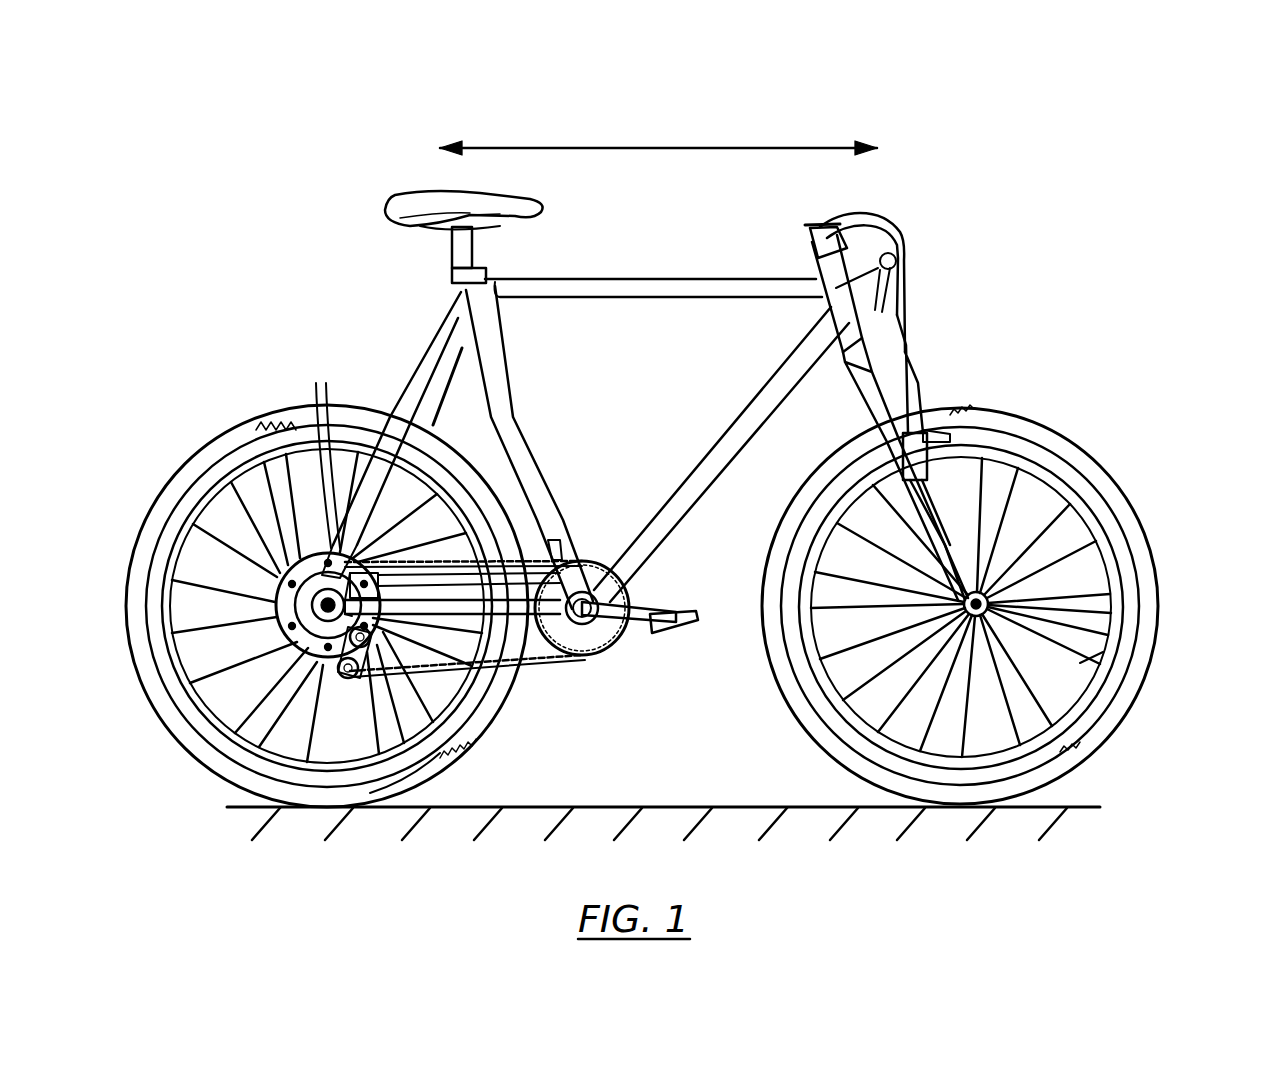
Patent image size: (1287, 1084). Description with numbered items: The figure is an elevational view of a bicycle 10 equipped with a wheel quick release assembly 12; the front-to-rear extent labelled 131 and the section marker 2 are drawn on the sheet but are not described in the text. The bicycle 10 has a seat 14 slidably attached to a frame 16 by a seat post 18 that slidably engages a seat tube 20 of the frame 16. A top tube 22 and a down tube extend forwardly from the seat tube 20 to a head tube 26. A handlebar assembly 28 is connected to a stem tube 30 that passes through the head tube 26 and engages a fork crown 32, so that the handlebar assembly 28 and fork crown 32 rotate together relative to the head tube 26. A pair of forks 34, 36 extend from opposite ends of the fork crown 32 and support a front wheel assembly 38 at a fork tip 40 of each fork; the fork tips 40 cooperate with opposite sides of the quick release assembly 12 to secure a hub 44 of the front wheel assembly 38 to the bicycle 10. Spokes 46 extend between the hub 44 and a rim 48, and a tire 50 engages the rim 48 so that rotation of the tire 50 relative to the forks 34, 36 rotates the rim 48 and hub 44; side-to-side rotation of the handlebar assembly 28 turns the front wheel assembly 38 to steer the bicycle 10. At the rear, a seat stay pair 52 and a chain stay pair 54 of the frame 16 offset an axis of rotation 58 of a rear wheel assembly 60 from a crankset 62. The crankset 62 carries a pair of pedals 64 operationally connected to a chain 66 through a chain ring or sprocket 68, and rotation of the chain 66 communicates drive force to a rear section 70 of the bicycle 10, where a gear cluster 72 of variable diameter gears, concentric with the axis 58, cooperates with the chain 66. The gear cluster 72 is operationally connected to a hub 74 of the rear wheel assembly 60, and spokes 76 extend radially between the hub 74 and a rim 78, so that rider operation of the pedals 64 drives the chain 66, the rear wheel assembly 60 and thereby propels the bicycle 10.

The bicycle 10 is at (1122, 136).
The wheelbase 131 is at (728, 76).
The wheel quick release assembly 12 is at (1002, 582).
The seat 14 is at (432, 196).
The frame 16 is at (627, 233).
The seat post 18 is at (452, 256).
The seat tube 20 is at (505, 357).
The top tube 22 is at (661, 278).
The head tube 26 is at (820, 309).
The handlebar assembly 28 is at (840, 200).
The stem tube 30 is at (797, 242).
The fork crown 32 is at (872, 330).
The fork 34 is at (896, 362).
The fork 36 is at (980, 392).
The front wheel assembly 38 is at (1112, 397).
The fork tip 40 is at (828, 657).
The hub 44 is at (1125, 619).
The spokes 46 is at (1080, 663).
The rim 48 is at (1100, 503).
The tire 50 is at (1100, 462).
The seat stay pair 52 is at (432, 421).
The chain stay pair 54 is at (473, 687).
The axis of rotation 58 is at (280, 634).
The rear wheel assembly 60 is at (230, 418).
The crankset 62 is at (568, 697).
The pedals 64 is at (688, 617).
The chain 66 is at (550, 533).
The chain ring or sprocket 68 is at (597, 642).
The rear section 70 is at (328, 702).
The gear cluster 72 is at (305, 656).
The hub 74 is at (277, 610).
The spokes 76 is at (322, 451).
The rim 78 is at (187, 497).
The section line 2- 2 is at (883, 577).